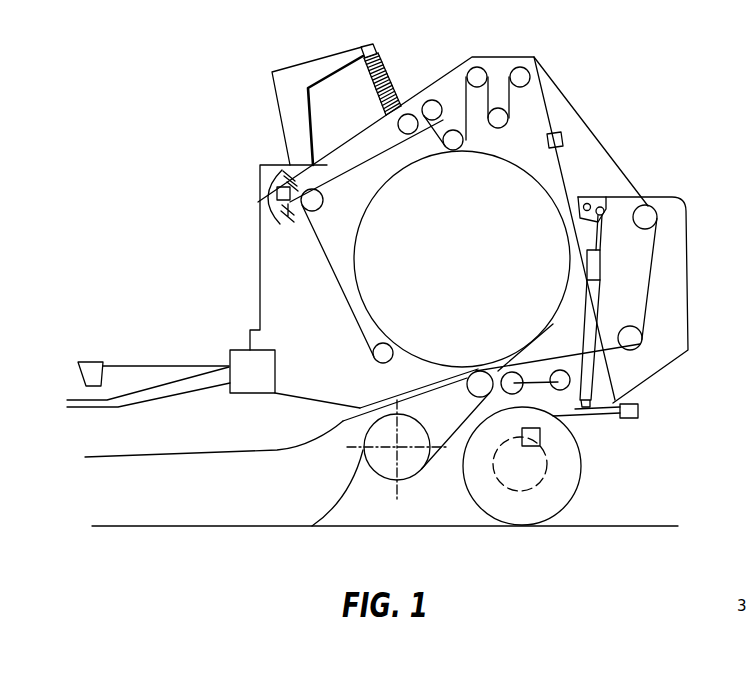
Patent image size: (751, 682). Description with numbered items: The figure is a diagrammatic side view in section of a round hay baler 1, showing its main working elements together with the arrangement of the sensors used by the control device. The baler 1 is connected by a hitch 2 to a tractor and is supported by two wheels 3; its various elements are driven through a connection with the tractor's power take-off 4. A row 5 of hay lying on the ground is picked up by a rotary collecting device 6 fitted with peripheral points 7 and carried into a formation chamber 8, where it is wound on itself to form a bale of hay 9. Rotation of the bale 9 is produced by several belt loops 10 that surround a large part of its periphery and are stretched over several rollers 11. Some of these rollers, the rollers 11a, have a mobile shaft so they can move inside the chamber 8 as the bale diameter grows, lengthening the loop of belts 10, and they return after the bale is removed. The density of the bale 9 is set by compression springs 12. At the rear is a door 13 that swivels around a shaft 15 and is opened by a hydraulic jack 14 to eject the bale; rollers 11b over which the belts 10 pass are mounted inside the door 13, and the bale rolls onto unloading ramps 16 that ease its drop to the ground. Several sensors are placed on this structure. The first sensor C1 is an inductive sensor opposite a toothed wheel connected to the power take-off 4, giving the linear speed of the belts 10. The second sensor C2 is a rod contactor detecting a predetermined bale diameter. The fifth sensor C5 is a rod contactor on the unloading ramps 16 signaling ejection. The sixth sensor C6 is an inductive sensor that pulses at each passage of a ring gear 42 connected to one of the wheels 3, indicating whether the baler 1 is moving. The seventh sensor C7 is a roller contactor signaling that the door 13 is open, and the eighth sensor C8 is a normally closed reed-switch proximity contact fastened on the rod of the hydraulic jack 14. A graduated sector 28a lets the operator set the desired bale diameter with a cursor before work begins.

The hay baler 1 is at (254, 135).
The hitch 2 is at (172, 390).
The wheels 3 is at (577, 492).
The power take-off 4 is at (92, 372).
The row 5 is at (237, 482).
The rotary collecting device 6 is at (390, 463).
The peripheral points 7 is at (397, 495).
The formation chamber 8 is at (368, 163).
The bale of hay 9 is at (357, 265).
The belt loops 10 is at (347, 308).
The rollers 11 is at (383, 353).
The mobile-shaft rollers 11a is at (498, 128).
The door rollers 11b is at (650, 222).
The compression springs 12 is at (382, 50).
The door 13 is at (687, 290).
The hydraulic jack 14 is at (593, 292).
The shaft 15 is at (593, 205).
The unloading ramps 16 is at (615, 417).
The graduated sector 28a is at (297, 210).
The ring gear 42 is at (497, 477).
The first sensor C1 is at (233, 363).
The second sensor C2 is at (277, 193).
The fifth sensor C5 is at (640, 405).
The sixth sensor C6 is at (547, 440).
The seventh sensor C7 is at (563, 142).
The eighth sensor C8 is at (588, 262).